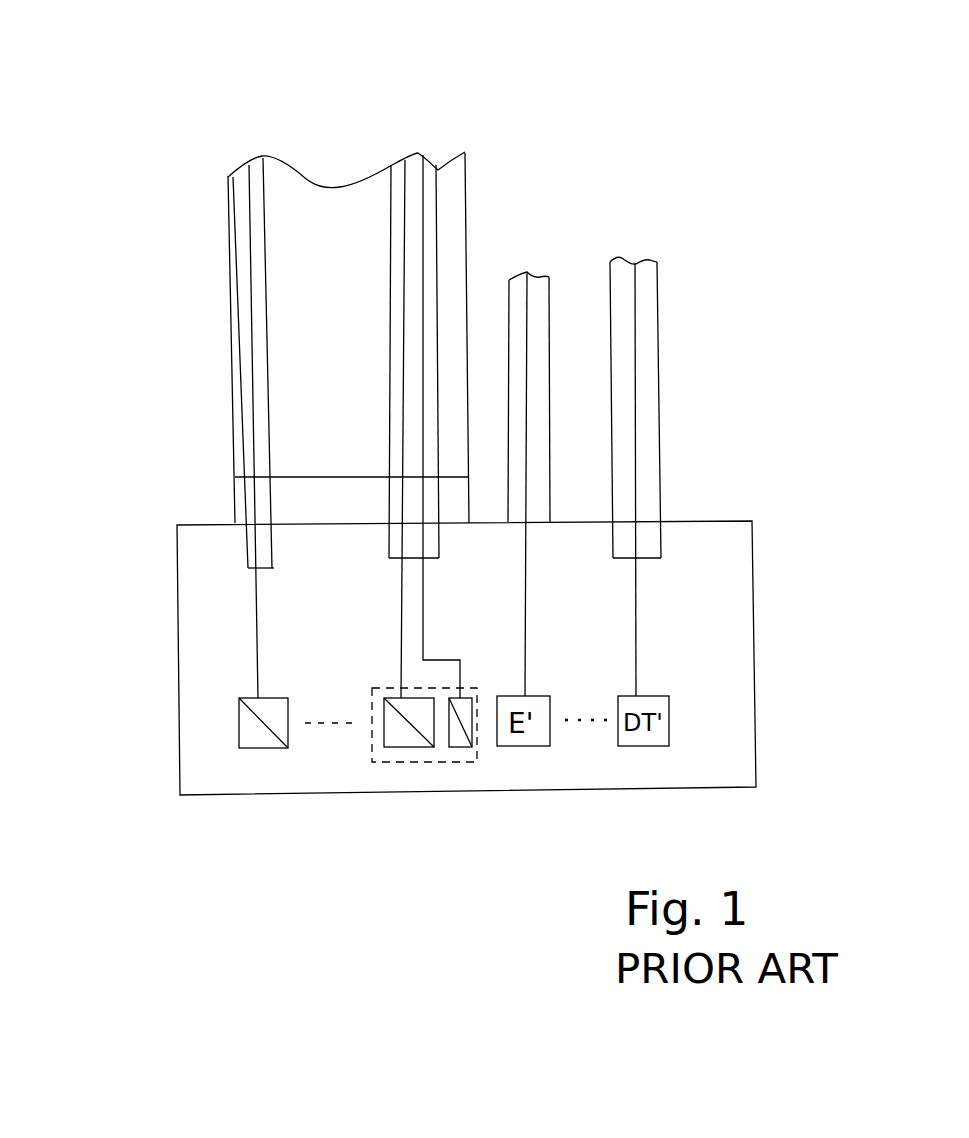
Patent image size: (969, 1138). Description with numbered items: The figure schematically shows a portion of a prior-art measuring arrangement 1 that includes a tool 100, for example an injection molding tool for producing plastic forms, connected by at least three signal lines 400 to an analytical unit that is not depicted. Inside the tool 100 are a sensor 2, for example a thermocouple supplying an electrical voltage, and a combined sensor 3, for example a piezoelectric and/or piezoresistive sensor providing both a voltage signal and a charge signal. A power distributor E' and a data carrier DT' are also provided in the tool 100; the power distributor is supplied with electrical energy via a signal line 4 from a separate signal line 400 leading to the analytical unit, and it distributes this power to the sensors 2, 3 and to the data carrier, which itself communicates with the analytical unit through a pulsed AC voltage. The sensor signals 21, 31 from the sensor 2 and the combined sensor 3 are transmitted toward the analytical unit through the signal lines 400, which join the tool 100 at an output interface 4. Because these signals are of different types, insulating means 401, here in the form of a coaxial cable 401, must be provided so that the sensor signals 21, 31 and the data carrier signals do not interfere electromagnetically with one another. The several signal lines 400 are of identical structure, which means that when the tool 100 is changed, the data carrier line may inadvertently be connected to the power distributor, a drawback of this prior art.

The measuring arrangement 1 is at (730, 357).
The sensor 2 is at (255, 743).
The combined sensor 3 is at (420, 752).
The signal line / output interface 4 is at (237, 497).
The sensor signal 21 is at (253, 160).
The sensor signal 31 is at (433, 167).
The tool 100 is at (733, 613).
The signal line 400 is at (453, 182).
The insulating means (coaxial cable) 401 is at (660, 427).